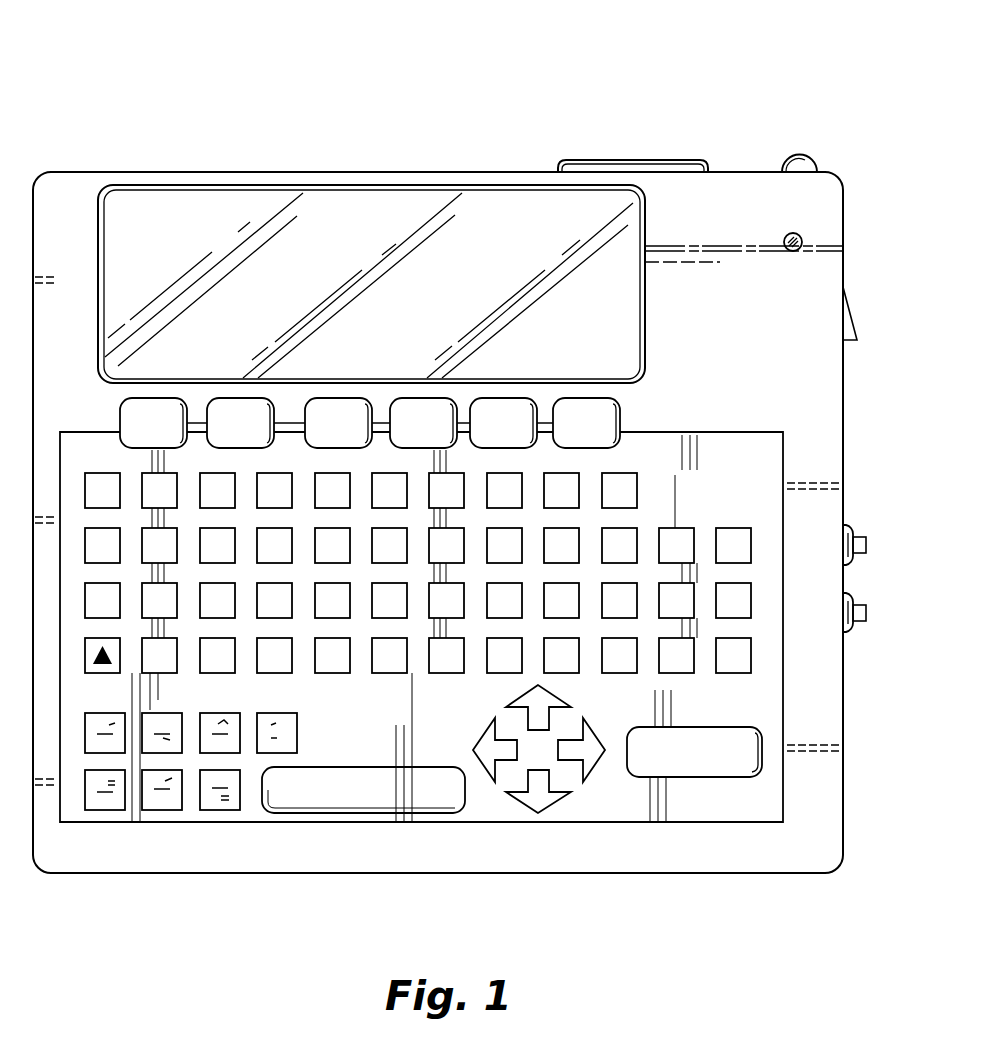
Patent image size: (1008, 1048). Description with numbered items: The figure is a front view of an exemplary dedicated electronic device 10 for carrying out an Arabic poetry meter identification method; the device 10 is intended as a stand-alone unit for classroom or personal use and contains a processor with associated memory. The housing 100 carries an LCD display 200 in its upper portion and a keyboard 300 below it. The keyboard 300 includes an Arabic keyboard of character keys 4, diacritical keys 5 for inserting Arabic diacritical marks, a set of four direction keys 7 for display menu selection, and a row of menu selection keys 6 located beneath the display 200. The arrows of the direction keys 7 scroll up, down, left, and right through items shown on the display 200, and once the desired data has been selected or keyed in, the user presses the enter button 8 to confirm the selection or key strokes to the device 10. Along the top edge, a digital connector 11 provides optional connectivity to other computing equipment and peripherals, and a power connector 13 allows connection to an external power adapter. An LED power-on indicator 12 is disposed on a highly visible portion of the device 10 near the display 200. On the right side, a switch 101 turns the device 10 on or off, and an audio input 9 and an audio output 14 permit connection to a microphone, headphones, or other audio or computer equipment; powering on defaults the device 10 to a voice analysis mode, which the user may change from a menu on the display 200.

The dedicated electronic device 10 is at (174, 86).
The housing 100 is at (728, 866).
The switch 101 is at (850, 312).
The LCD display 200 is at (160, 206).
The keyboard 300 is at (722, 448).
The character keys 4 is at (92, 473).
The diacritical keys 5 is at (297, 729).
The menu selection keys 6 is at (122, 421).
The direction keys 7 is at (480, 740).
The enter button 8 is at (643, 732).
The audio input 9 is at (858, 537).
The digital connector 11 is at (590, 160).
The LED power-on indicator 12 is at (787, 235).
The power connector 13 is at (795, 160).
The audio output 14 is at (858, 622).